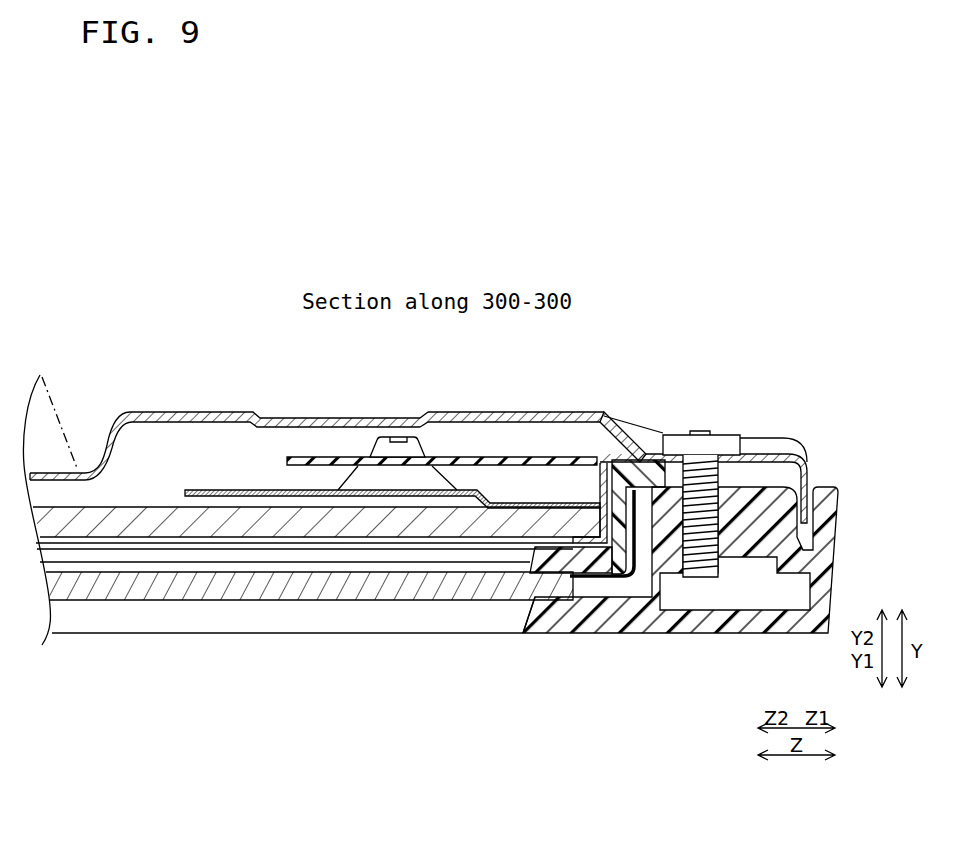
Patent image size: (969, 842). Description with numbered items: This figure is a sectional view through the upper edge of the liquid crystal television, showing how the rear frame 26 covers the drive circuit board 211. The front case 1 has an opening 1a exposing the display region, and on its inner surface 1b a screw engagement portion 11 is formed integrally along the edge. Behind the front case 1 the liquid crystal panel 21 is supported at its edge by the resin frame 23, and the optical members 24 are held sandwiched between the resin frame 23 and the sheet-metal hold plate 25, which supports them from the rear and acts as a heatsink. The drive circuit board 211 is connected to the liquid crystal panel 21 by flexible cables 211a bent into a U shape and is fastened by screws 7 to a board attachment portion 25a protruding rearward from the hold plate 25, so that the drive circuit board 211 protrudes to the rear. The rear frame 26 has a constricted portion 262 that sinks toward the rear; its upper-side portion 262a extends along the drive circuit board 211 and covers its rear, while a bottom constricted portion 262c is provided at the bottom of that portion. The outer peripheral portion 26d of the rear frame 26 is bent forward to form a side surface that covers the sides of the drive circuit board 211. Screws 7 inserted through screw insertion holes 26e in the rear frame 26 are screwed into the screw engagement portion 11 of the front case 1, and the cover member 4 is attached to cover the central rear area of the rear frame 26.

The front case 1 is at (656, 598).
The opening 1a is at (560, 602).
The inner surface 1b is at (503, 598).
The cover member 4 is at (55, 403).
The screw 7 is at (397, 437).
The screw engagement portion 11 is at (707, 540).
The liquid crystal panel 21 is at (410, 593).
The resin frame 23 is at (605, 575).
The optical members 24 is at (153, 507).
The hold plate 25 is at (217, 490).
The board attachment portion 25a is at (342, 477).
The rear frame 26 is at (454, 533).
The outer peripheral portion 26d is at (808, 483).
The screw insertion hole 26e is at (720, 438).
The drive circuit board 211 is at (533, 457).
The flexible cable 211a is at (610, 420).
The constricted portion 262 is at (81, 569).
The upper-side portion of constricted portion 262a is at (113, 455).
The bottom constricted portion 262c is at (412, 411).